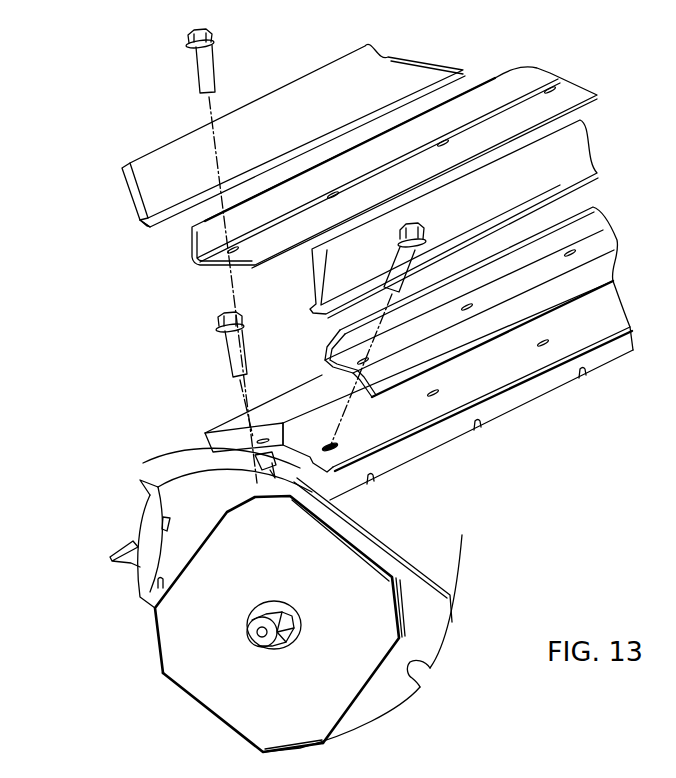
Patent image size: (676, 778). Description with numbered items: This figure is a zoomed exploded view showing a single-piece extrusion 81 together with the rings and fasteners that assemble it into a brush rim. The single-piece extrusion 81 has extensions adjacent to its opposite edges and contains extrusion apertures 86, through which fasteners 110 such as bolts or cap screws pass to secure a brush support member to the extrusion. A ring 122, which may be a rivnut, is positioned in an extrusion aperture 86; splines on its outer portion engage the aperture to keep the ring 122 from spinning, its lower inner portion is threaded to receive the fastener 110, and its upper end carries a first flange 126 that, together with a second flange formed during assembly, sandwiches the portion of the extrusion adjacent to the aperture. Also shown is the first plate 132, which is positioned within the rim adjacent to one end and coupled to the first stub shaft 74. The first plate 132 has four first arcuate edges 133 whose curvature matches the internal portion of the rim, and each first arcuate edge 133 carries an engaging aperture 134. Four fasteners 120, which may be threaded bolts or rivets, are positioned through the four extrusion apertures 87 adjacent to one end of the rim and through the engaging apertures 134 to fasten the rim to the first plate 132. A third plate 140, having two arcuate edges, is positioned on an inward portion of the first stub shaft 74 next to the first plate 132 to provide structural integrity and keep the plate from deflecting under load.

The fastener 110 is at (205, 75).
The fastener 120 is at (232, 353).
The extrusion aperture 87 is at (245, 440).
The extrusion aperture 86 is at (430, 394).
The first flange 126 is at (340, 447).
The ring 122 is at (330, 503).
The first plate 132 is at (302, 692).
The first arcuate edge 133 is at (240, 504).
The engaging aperture 134 is at (215, 462).
The single-piece extrusion 81 is at (182, 540).
The first stub shaft 74 is at (260, 618).
The third plate 140 is at (387, 686).